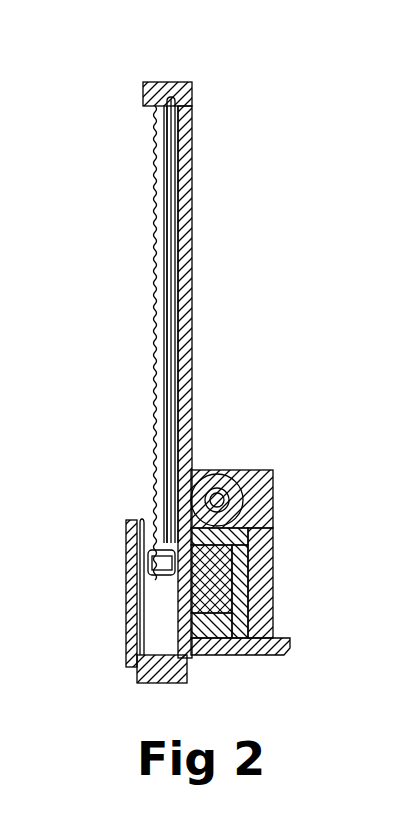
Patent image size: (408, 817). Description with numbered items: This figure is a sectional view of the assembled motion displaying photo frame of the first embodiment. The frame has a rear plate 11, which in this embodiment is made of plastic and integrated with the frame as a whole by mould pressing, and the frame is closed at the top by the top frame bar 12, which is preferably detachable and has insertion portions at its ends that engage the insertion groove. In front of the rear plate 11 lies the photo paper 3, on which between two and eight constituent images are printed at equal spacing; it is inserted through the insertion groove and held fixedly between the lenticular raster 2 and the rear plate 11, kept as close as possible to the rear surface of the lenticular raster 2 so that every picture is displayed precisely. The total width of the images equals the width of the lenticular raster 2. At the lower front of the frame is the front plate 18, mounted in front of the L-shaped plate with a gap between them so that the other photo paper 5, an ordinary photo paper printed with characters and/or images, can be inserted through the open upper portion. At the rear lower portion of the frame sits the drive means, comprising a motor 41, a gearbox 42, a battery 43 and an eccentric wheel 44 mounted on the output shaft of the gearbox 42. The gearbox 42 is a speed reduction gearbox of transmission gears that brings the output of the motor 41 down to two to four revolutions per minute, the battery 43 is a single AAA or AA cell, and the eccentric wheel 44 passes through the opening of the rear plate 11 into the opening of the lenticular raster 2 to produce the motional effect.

The lenticular raster 2 is at (156, 191).
The photo paper 3 is at (183, 134).
The other photo paper 5 is at (140, 520).
The rear plate 11 is at (190, 290).
The top frame bar 12 is at (170, 82).
The front plate 18 is at (127, 566).
The motor 41 is at (252, 596).
The gearbox 42 is at (215, 602).
The battery 43 is at (215, 496).
The eccentric wheel 44 is at (172, 568).